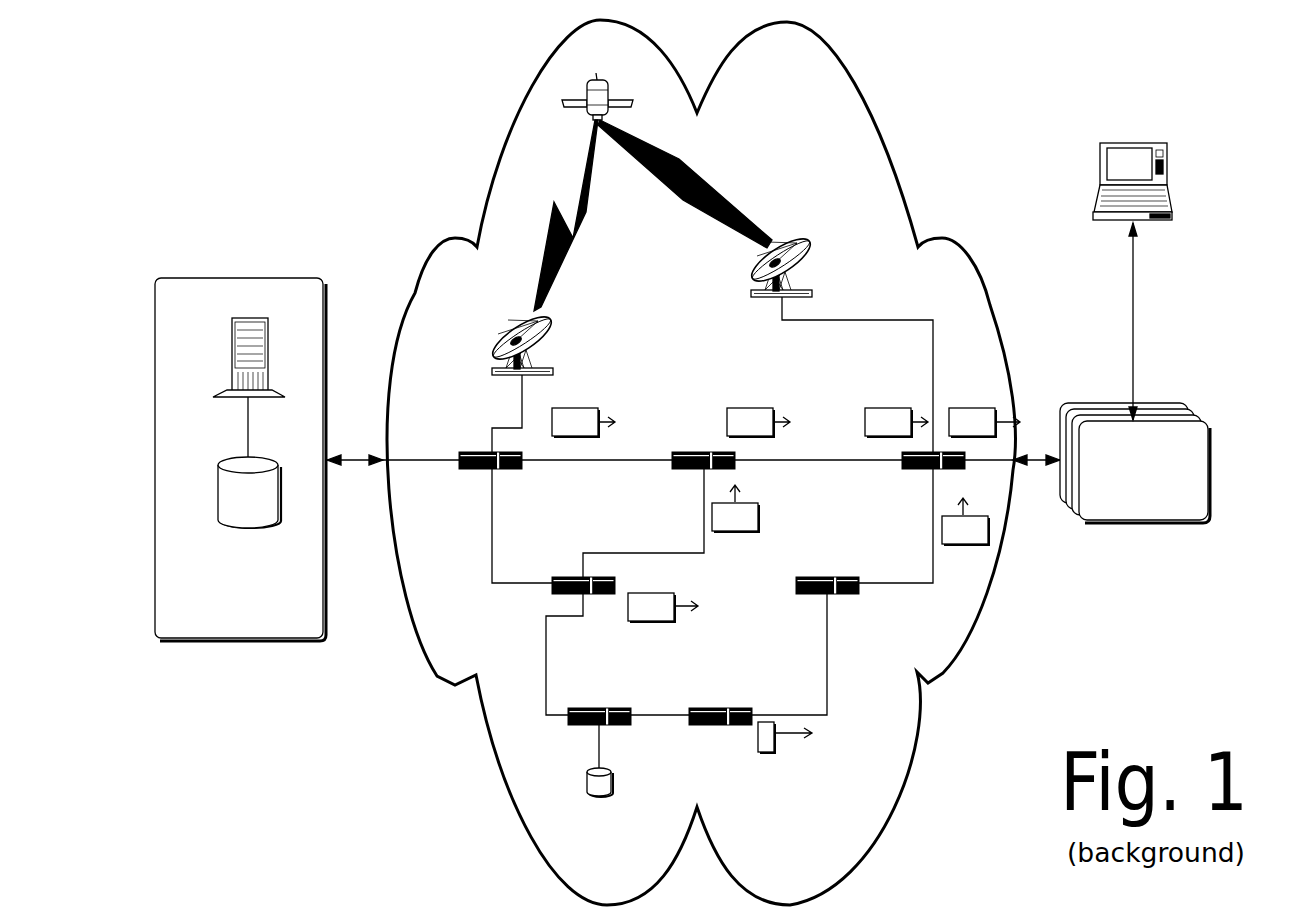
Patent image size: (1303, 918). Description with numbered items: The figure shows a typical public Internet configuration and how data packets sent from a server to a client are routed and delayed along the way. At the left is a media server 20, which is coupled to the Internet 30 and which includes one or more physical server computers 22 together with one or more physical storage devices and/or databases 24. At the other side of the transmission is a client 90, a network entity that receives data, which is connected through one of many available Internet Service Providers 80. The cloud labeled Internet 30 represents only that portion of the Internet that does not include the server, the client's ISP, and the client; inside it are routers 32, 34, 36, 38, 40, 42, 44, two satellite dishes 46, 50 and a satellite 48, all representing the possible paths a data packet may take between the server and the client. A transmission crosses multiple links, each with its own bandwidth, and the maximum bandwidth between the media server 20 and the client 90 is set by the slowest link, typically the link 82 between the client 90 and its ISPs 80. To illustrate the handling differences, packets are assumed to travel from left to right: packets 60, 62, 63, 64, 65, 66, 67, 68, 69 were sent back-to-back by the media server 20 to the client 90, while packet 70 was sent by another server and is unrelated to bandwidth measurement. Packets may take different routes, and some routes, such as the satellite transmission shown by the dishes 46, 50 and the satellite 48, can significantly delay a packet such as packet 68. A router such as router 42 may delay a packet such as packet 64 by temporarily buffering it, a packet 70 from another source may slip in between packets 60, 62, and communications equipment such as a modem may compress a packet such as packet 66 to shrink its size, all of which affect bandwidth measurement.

The media server 20 is at (291, 312).
The physical server computer 22 is at (232, 362).
The physical storage device and/or database 24 is at (218, 492).
The Internet 30 is at (825, 161).
The router 32 is at (472, 471).
The router 34 is at (675, 471).
The router 36 is at (903, 471).
The router 38 is at (557, 577).
The router 40 is at (797, 594).
The router 42 is at (573, 727).
The router 44 is at (690, 727).
The satellite dish 46 is at (490, 374).
The satellite 48 is at (598, 74).
The satellite dish 50 is at (752, 298).
The packet 60 is at (984, 423).
The packet 62 is at (758, 423).
The packet 63 is at (583, 423).
The packet 64 is at (599, 796).
The packet 65 is at (736, 509).
The packet 66 is at (773, 752).
The packet 67 is at (663, 608).
The packet 68 is at (643, 188).
The packet 69 is at (966, 522).
The packet 70 is at (896, 423).
The Internet Service Provider 80 is at (1137, 522).
The link 82 is at (1134, 310).
The client 90 is at (1168, 172).